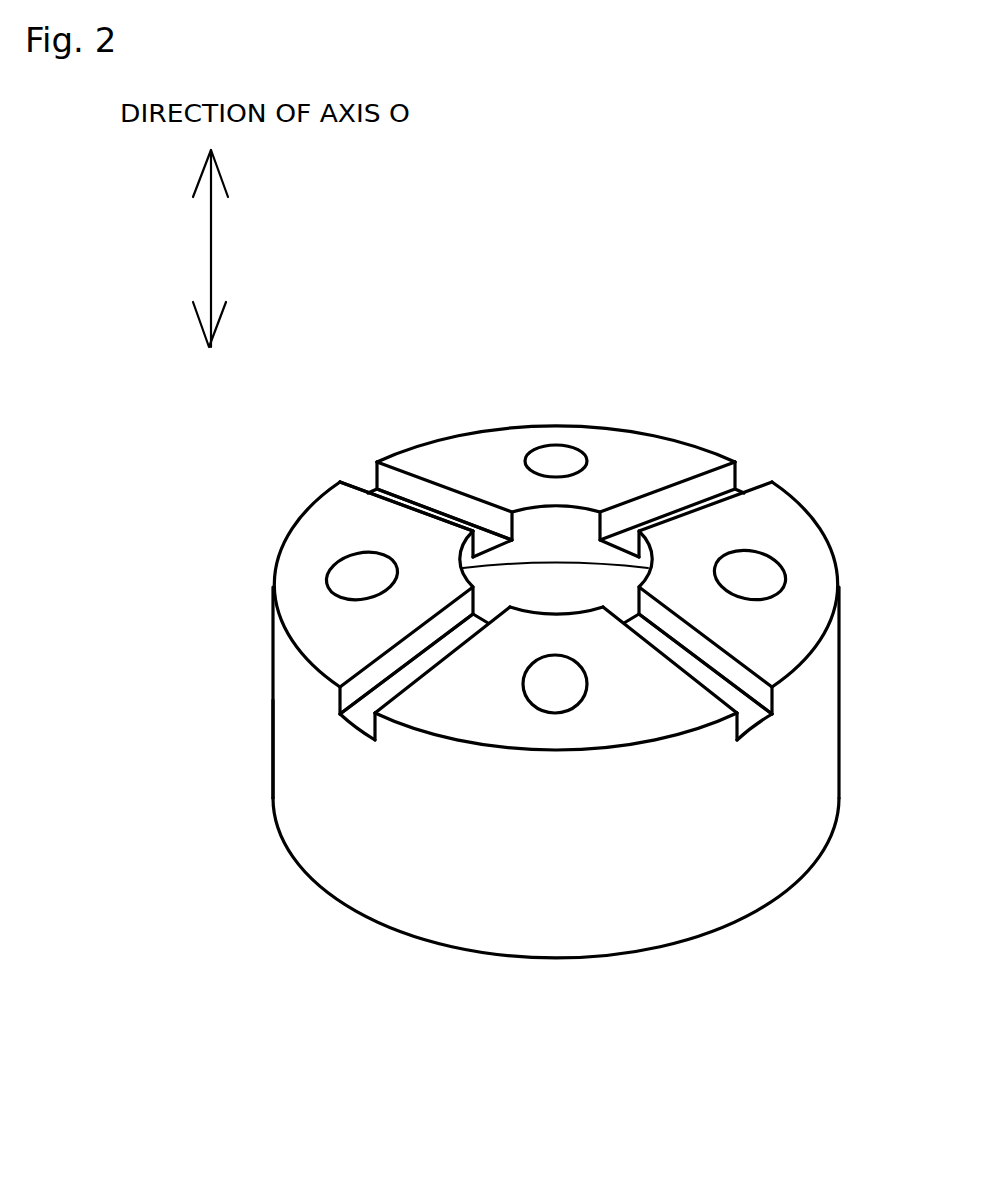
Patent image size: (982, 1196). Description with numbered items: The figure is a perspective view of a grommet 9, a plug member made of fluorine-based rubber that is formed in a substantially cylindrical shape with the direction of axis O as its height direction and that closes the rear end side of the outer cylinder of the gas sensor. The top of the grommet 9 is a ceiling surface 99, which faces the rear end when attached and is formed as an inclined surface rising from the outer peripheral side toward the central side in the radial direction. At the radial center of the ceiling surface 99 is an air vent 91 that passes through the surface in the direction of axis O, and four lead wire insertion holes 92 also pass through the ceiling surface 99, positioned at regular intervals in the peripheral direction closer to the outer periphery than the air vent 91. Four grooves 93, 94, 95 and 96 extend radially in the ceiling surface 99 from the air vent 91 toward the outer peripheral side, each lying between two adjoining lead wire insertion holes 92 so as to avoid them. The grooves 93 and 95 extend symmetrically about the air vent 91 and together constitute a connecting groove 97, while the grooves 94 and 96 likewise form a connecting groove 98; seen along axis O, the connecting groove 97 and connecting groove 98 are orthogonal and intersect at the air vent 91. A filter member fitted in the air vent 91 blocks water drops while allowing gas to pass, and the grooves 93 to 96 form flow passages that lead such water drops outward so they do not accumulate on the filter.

The grommet 9 is at (800, 337).
The air vent 91 is at (545, 552).
The lead wire insertion hole 92 is at (556, 458).
The groove 93 is at (433, 650).
The groove 94 is at (487, 538).
The groove 95 is at (625, 537).
The groove 96 is at (470, 572).
The connecting groove 97 is at (473, 526).
The connecting groove 98 is at (421, 363).
The ceiling surface 99 is at (617, 673).